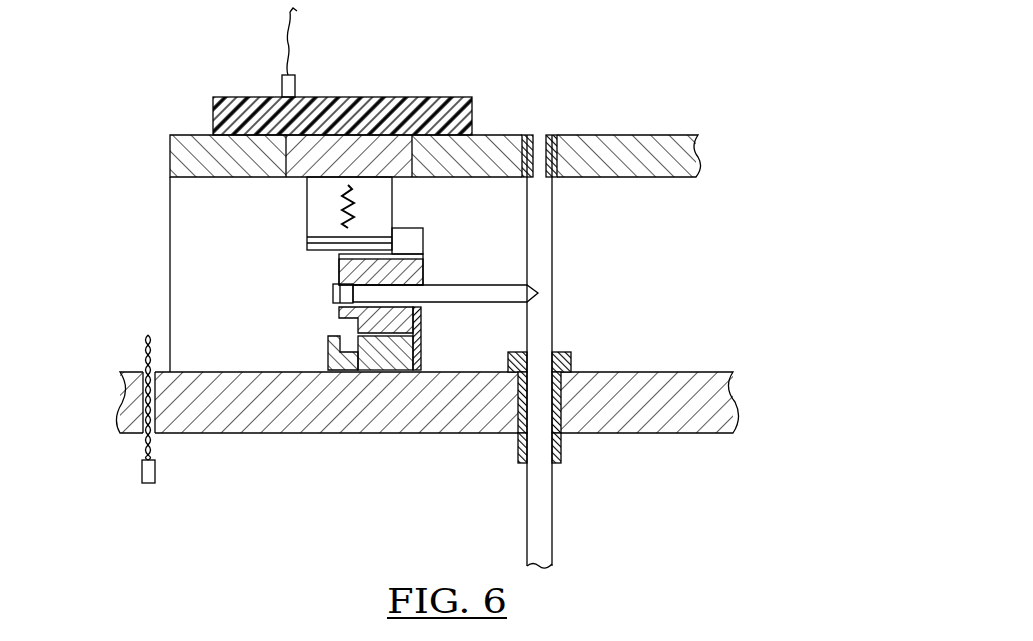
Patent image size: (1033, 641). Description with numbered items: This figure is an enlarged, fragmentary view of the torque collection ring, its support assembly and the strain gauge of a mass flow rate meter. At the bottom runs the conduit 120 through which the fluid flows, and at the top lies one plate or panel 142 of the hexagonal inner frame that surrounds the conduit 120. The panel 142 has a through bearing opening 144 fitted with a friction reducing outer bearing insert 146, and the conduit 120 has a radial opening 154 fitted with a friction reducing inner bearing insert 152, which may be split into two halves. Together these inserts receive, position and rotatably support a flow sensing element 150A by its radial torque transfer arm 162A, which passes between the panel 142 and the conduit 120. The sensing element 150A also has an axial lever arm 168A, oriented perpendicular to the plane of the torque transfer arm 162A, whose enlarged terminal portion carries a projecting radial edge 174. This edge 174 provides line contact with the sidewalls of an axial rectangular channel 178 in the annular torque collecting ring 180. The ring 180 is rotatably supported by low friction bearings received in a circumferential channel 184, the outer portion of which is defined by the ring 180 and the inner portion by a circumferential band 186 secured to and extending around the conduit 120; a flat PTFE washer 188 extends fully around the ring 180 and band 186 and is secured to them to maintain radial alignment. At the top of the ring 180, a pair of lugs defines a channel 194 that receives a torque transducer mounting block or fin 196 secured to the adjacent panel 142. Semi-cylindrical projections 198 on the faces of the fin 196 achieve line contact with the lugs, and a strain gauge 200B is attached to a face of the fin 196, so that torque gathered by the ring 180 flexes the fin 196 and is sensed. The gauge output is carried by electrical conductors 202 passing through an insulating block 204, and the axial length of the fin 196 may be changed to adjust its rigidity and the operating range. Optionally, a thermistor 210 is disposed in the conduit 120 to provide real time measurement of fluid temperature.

The conduit 120 is at (420, 420).
The plate or panel 142 is at (655, 150).
The bearing opening 144 is at (551, 135).
The outer bearing insert 146 is at (530, 135).
The flow sensing element 150A is at (570, 231).
The inner bearing insert 152 is at (568, 368).
The radial opening 154 is at (540, 437).
The torque transfer arm 162A is at (540, 310).
The axial lever arm 168A is at (435, 295).
The radial edge 174 is at (340, 283).
The axial rectangular channel 178 is at (337, 303).
The torque collecting ring 180 is at (410, 272).
The circumferential channel 184 is at (345, 327).
The circumferential band 186 is at (372, 372).
The PTFE washer 188 is at (420, 345).
The channel 194 is at (408, 240).
The torque transducer mounting block or fin 196 is at (323, 212).
The semi-cylindrical projection 198 is at (315, 241).
The strain gauge 200B is at (360, 203).
The electrical conductor 202 is at (282, 43).
The insulating block 204 is at (370, 112).
The thermistor 210 is at (143, 473).